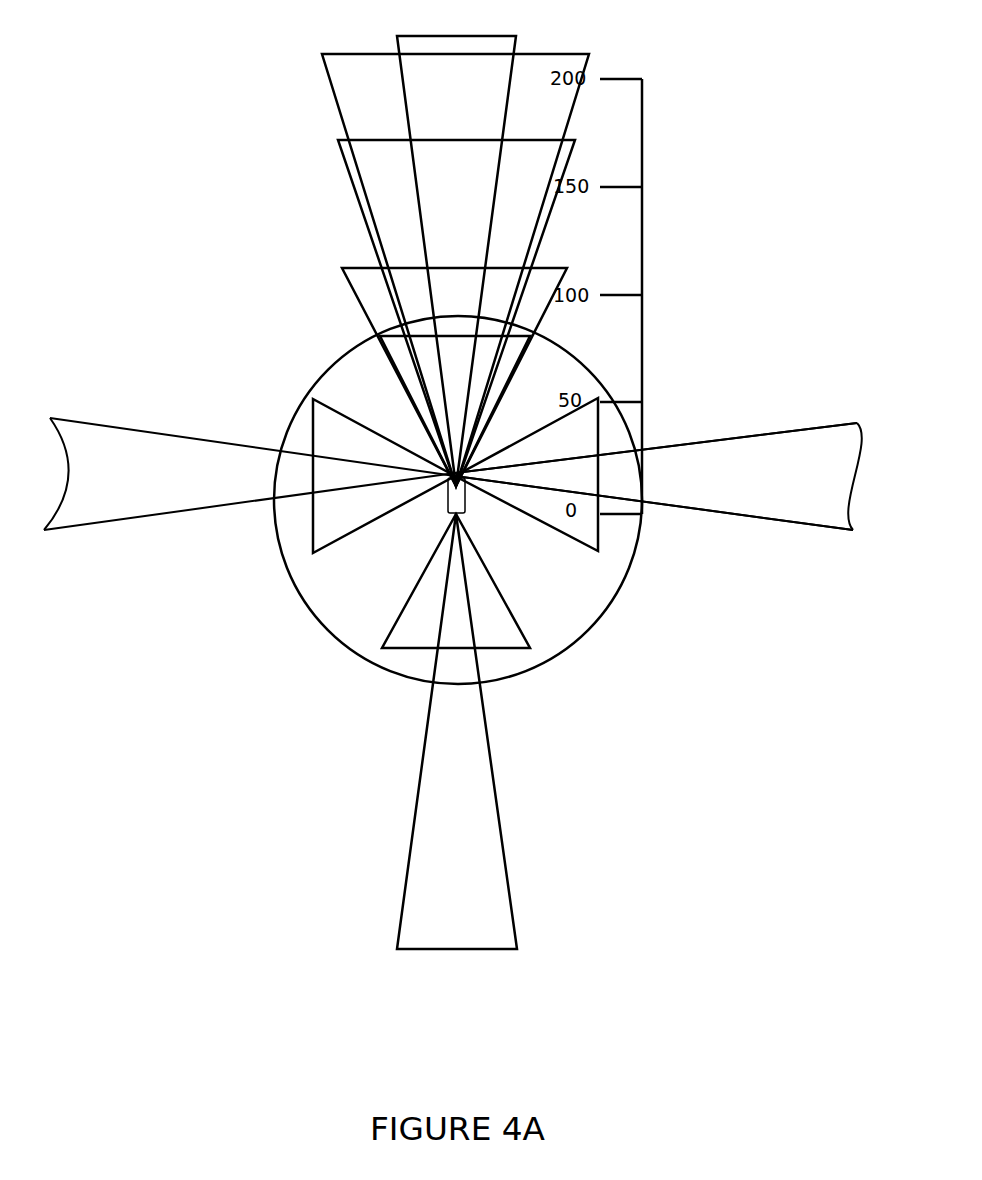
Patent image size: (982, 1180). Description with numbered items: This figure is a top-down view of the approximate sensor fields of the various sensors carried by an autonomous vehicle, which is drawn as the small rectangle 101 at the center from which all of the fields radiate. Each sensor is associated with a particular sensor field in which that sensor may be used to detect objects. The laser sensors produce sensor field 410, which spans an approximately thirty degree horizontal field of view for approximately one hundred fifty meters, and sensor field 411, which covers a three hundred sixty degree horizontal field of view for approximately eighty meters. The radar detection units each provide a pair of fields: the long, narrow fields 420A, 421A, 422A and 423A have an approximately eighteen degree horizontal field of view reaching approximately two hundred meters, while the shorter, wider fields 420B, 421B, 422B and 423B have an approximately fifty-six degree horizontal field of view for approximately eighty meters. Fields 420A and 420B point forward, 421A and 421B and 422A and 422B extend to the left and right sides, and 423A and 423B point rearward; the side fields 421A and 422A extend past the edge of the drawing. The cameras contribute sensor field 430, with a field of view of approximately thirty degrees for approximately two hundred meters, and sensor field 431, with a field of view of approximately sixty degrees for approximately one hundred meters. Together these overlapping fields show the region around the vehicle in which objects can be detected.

The device 101 is at (447, 488).
The sensor field 410 is at (368, 230).
The sensor field 411 is at (345, 280).
The sensor field 420A is at (416, 195).
The sensor field 420B is at (400, 395).
The sensor field 421A is at (197, 440).
The sensor field 421B is at (313, 412).
The sensor field 422A is at (677, 443).
The sensor field 422B is at (600, 522).
The sensor field 423A is at (415, 802).
The sensor field 423B is at (393, 628).
The sensor field 430 is at (332, 95).
The sensor field 431 is at (281, 438).